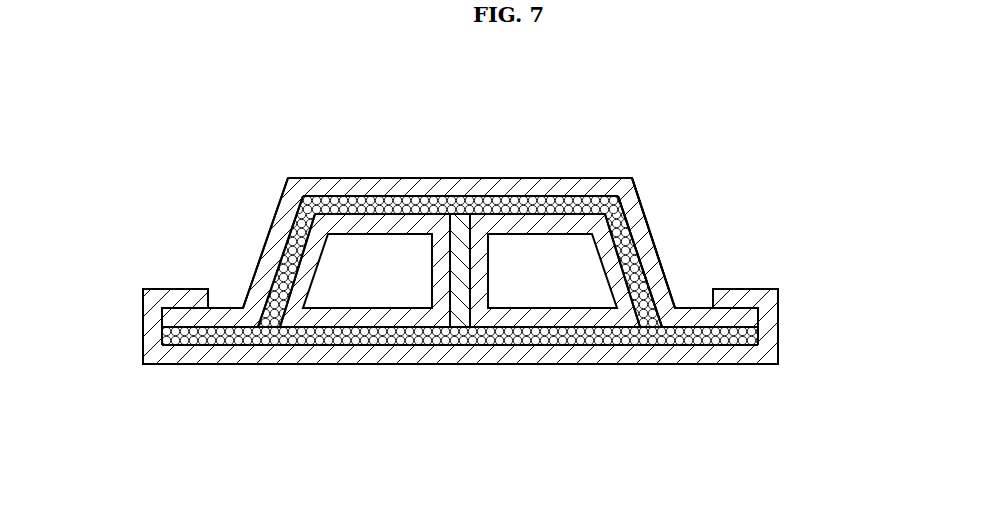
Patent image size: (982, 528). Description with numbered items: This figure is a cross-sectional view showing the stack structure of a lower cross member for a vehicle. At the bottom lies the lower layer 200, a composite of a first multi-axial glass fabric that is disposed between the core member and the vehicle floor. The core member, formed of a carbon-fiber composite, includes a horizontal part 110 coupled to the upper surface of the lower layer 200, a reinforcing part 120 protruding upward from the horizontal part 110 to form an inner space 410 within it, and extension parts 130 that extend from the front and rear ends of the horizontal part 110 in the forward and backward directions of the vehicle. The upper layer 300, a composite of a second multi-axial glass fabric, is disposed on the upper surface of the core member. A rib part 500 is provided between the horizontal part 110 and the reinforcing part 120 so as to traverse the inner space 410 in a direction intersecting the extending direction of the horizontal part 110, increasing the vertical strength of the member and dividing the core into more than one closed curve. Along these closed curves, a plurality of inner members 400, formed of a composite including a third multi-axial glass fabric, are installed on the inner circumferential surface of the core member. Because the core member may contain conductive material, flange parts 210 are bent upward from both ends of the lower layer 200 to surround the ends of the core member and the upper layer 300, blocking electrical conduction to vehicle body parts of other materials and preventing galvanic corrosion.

The horizontal part 110 is at (517, 338).
The reinforcing part 120 is at (647, 226).
The extension parts 130 is at (706, 345).
The lower layer 200 is at (308, 355).
The flange parts 210 is at (152, 320).
The upper layer 300 is at (300, 183).
The inner member 400 is at (310, 257).
The inner space 410 is at (380, 265).
The rib part 500 is at (462, 222).